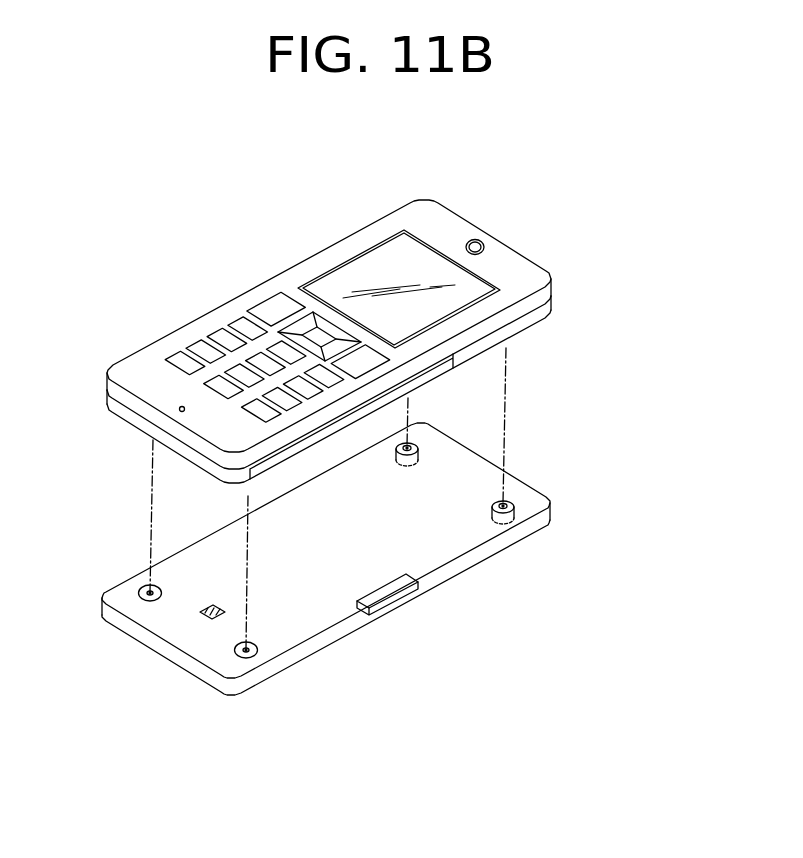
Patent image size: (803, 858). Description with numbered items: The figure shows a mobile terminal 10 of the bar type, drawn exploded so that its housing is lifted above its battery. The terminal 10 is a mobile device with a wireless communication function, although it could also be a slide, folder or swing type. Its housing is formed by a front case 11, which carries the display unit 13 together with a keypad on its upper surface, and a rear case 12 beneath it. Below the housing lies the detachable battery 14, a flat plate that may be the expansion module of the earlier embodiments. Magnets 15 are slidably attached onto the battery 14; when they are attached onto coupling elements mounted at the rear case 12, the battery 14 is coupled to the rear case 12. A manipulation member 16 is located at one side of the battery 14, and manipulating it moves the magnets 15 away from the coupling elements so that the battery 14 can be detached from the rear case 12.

The mobile terminal 10 is at (240, 257).
The front case 11 is at (551, 289).
The rear case 12 is at (551, 304).
The display unit 13 is at (368, 265).
The detachable battery 14 is at (478, 557).
The magnets 15 is at (516, 521).
The manipulation member 16 is at (395, 605).